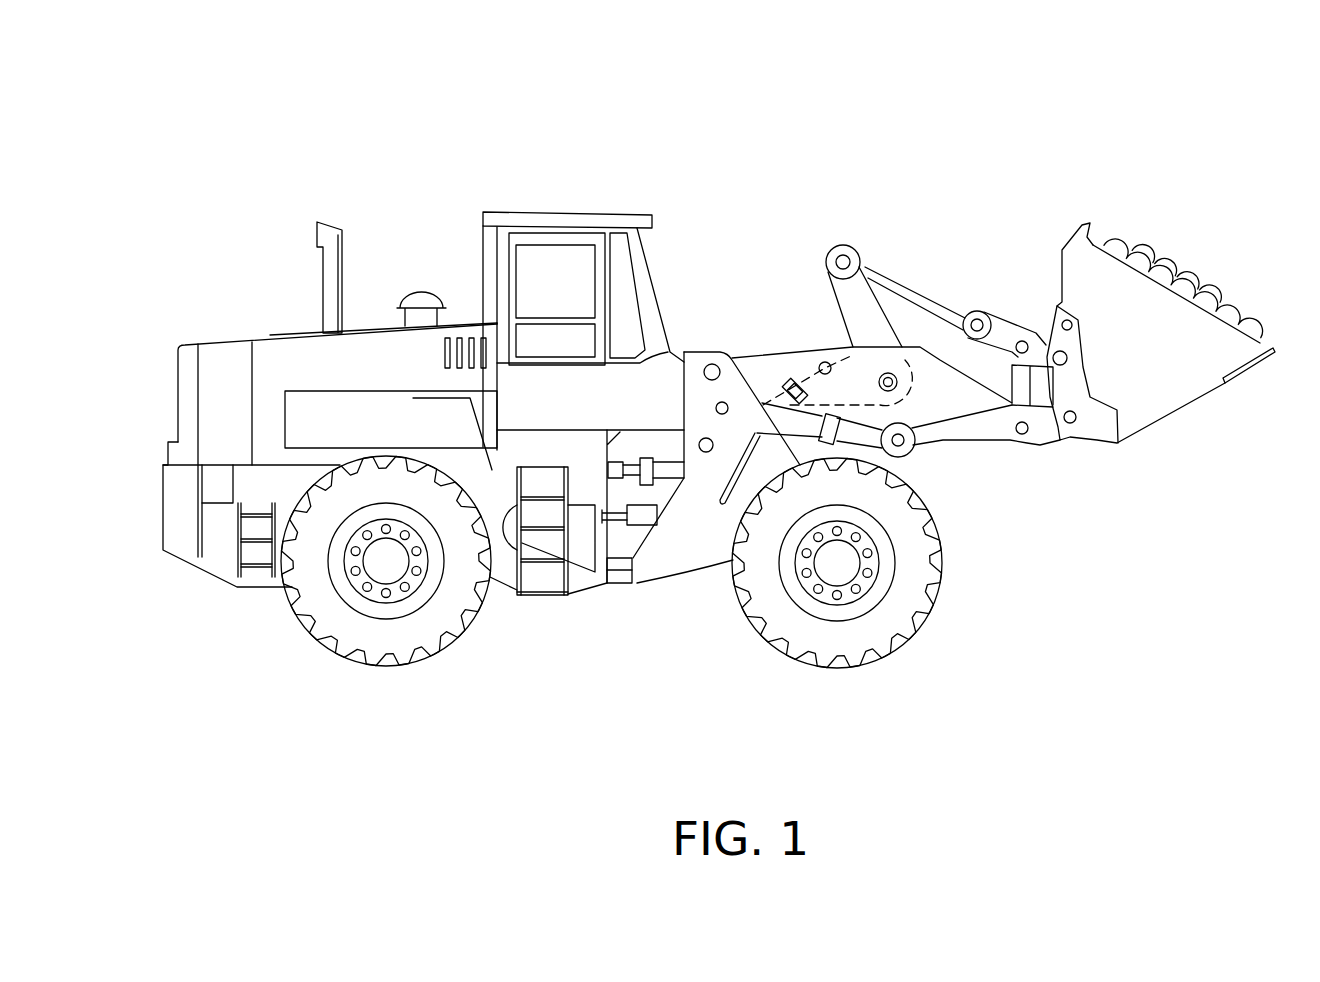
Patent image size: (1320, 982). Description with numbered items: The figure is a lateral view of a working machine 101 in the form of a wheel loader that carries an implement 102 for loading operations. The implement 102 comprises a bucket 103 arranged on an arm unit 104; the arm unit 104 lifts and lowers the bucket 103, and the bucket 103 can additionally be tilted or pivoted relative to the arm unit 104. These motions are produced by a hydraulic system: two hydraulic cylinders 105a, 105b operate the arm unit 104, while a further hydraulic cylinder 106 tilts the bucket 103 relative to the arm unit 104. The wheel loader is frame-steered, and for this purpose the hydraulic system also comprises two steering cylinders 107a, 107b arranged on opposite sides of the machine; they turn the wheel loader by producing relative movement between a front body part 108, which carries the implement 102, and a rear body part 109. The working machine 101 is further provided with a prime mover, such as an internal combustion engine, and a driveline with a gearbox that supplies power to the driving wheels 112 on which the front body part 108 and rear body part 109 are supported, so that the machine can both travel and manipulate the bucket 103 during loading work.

The working machine 101 is at (455, 115).
The implement 102 is at (1008, 255).
The bucket 103 is at (1145, 387).
The arm unit 104 is at (985, 418).
The hydraulic cylinder 105a is at (958, 504).
The hydraulic cylinder 105b is at (867, 450).
The hydraulic cylinder 106 is at (790, 382).
The hydraulic cylinder 107a is at (650, 598).
The hydraulic cylinder 107b is at (670, 487).
The front body part 108 is at (670, 555).
The rear body part 109 is at (222, 557).
The driving wheels 112 is at (337, 617).